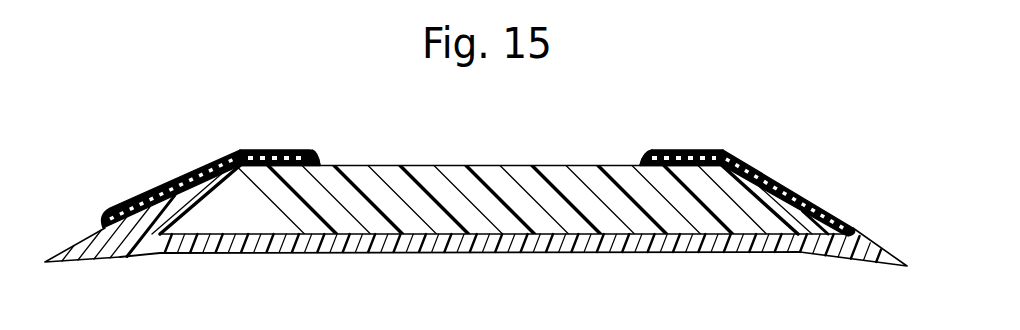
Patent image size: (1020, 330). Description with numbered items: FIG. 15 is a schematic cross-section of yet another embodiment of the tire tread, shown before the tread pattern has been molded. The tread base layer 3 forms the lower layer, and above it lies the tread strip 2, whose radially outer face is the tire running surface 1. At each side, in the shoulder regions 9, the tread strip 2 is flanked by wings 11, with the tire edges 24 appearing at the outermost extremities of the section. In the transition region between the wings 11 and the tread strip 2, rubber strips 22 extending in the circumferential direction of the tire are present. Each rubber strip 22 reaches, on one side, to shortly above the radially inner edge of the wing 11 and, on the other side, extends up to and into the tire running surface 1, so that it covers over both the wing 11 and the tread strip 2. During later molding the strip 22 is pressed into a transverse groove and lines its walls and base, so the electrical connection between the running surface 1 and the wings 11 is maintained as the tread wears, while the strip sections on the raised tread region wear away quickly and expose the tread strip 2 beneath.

The tire running surface 1 is at (418, 165).
The tread strip 2 is at (527, 190).
The tread base layer 3 is at (483, 236).
The shoulder regions 9 is at (314, 146).
The wings 11 is at (158, 195).
The rubber strips 22 is at (237, 152).
The steel edge 24 is at (47, 263).